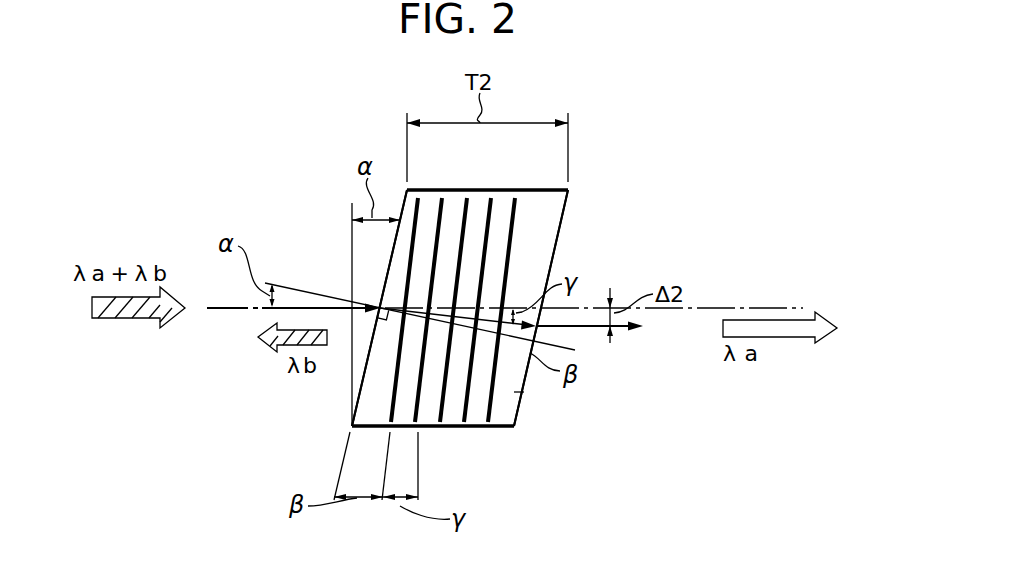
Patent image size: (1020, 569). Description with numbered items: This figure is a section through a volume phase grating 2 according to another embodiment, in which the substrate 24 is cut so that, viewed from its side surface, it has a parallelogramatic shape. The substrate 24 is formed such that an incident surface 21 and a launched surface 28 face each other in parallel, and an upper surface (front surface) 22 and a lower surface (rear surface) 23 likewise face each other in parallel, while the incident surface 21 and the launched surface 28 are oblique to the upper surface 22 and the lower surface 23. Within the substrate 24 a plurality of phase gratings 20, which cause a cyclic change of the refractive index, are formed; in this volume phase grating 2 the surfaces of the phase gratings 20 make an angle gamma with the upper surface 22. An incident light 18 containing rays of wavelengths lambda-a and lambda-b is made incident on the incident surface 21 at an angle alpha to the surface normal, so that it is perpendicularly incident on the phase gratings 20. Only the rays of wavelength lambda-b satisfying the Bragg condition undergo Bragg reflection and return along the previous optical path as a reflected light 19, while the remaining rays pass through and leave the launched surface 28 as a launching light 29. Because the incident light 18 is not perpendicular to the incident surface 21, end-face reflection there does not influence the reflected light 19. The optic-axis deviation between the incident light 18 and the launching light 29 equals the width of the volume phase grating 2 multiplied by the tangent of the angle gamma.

The volume phase grating 2 is at (473, 436).
The incident light 18 is at (108, 318).
The reflected light 19 is at (268, 352).
The phase gratings 20 is at (513, 232).
The incident surface 21 is at (389, 263).
The upper surface (front surface) 22 is at (503, 190).
The lower surface (rear surface) 23 is at (508, 430).
The substrate 24 is at (515, 392).
The launched surface 28 is at (527, 378).
The launching light 29 is at (780, 338).